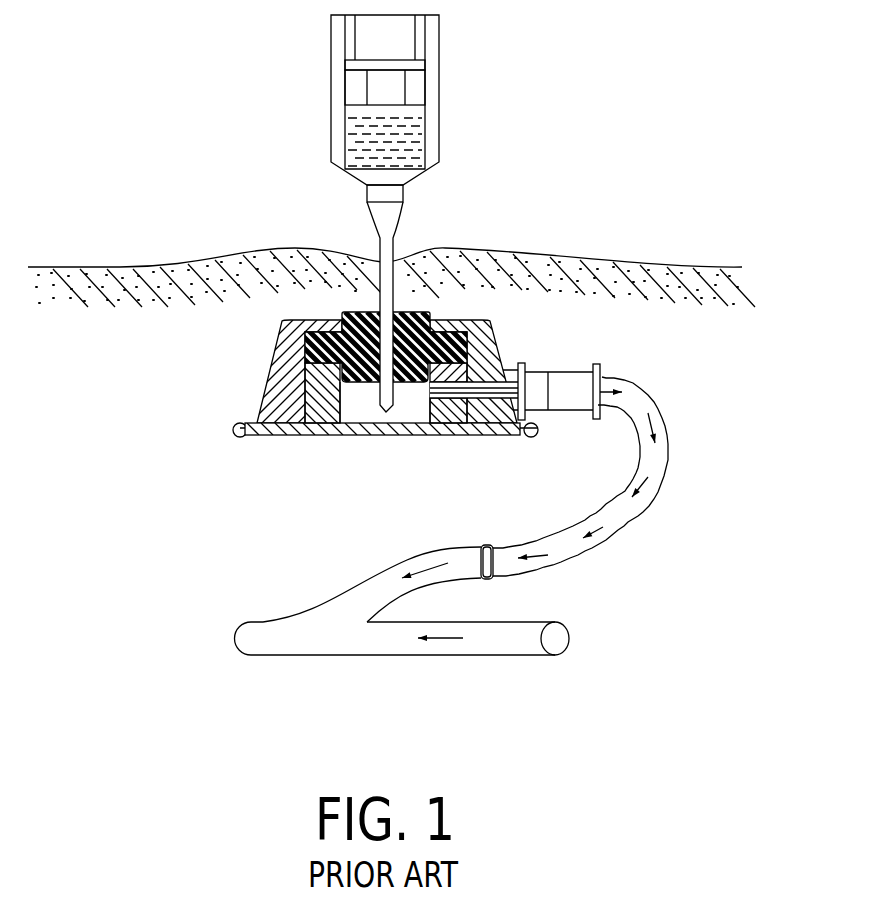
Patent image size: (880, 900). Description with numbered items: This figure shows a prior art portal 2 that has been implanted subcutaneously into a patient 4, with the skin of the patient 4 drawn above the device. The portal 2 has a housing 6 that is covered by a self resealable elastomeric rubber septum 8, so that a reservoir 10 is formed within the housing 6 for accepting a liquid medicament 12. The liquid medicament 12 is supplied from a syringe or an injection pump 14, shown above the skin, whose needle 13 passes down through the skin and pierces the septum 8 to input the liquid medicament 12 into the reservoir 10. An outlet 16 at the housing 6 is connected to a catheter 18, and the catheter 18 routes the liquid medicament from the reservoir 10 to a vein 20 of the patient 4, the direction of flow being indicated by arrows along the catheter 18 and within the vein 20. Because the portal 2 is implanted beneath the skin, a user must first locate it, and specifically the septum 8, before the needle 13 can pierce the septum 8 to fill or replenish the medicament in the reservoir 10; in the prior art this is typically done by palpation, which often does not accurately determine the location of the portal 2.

The portal 2 is at (236, 362).
The patient 4 is at (688, 337).
The housing 6 is at (322, 408).
The septum 8 is at (423, 312).
The reservoir 10 is at (362, 413).
The liquid medicament 12 is at (415, 139).
The needle 13 is at (385, 298).
The syringe or injection pump 14 is at (440, 64).
The outlet 16 is at (510, 377).
The catheter 18 is at (667, 429).
The vein 20 is at (338, 602).